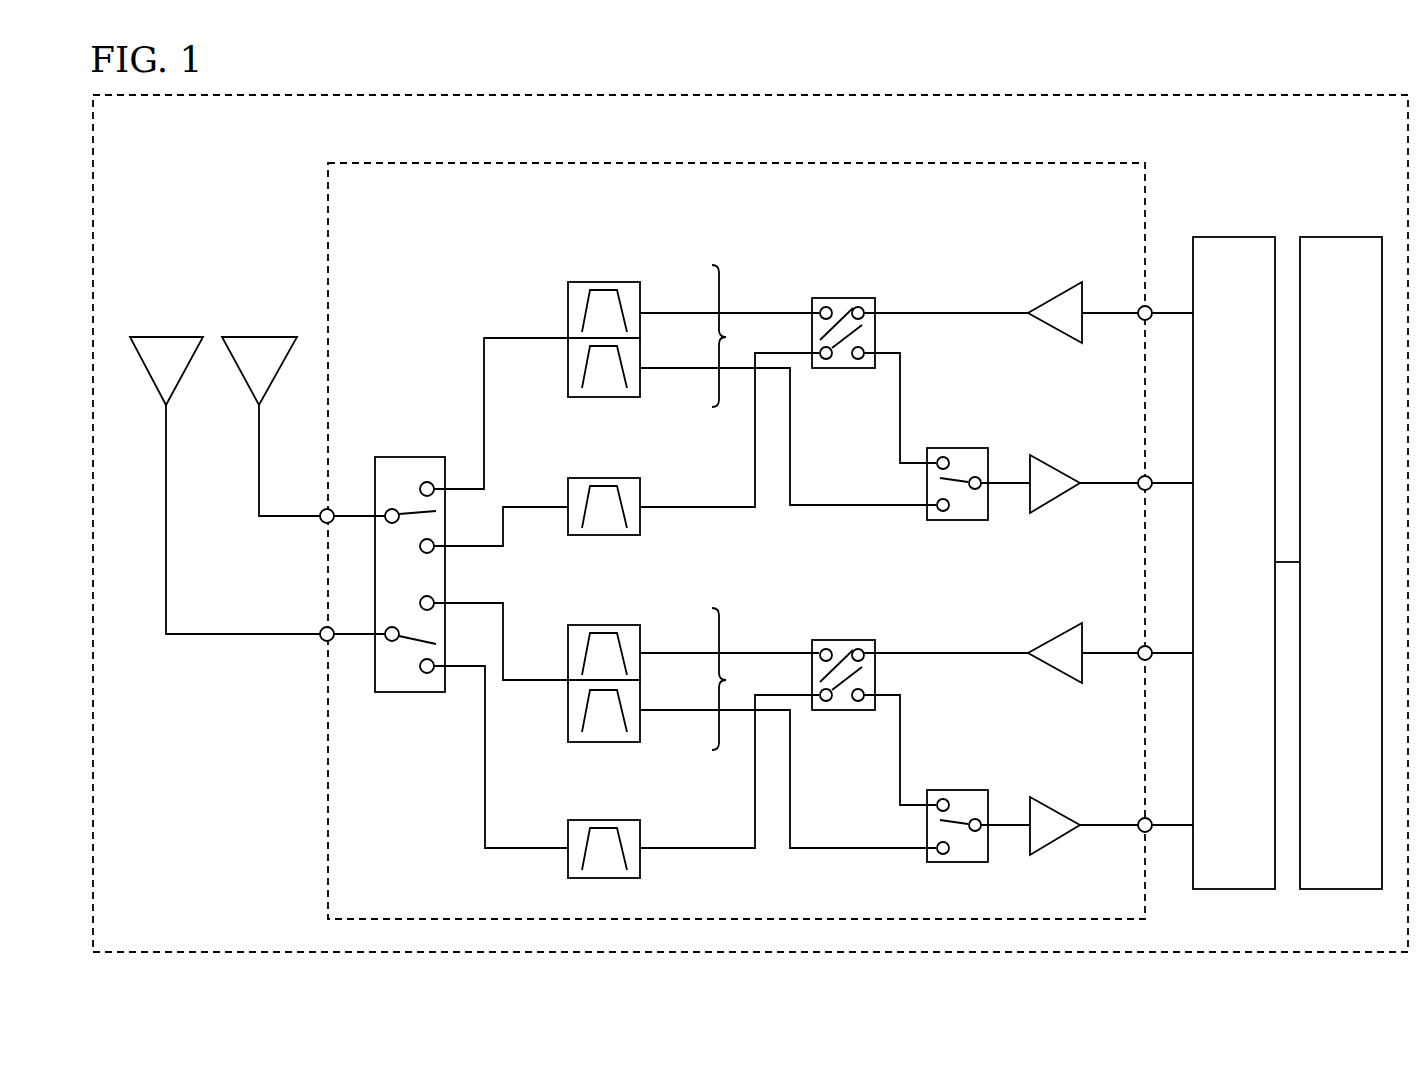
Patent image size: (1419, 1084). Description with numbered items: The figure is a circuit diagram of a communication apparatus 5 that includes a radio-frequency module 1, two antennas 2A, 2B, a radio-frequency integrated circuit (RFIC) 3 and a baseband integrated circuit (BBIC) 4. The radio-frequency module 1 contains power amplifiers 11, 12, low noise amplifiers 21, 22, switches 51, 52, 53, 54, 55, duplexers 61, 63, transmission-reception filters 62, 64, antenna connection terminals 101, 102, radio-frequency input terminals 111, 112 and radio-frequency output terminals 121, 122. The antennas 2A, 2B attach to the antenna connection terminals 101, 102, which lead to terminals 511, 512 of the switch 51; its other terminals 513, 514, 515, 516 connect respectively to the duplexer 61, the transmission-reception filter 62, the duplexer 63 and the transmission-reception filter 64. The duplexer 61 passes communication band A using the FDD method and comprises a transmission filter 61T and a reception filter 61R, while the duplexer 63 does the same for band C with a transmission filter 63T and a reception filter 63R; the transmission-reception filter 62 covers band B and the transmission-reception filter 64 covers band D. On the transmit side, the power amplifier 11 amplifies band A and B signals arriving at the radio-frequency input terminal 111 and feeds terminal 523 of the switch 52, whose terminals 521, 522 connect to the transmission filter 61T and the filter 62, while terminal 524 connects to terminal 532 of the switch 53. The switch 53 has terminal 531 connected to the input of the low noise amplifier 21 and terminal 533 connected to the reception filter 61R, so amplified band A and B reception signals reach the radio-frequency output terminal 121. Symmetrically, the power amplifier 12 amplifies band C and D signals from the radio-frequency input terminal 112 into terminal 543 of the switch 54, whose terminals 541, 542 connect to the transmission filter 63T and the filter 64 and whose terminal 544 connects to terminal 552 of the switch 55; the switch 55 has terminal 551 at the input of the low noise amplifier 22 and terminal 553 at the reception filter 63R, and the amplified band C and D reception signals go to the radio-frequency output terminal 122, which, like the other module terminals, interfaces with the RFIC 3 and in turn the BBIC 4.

The radio-frequency module 1 is at (1092, 162).
The antenna 2A is at (259, 336).
The antenna 2B is at (166, 336).
The radio-frequency integrated circuit (RFIC) 3 is at (1235, 237).
The baseband integrated circuit (BBIC) 4 is at (1342, 237).
The communication apparatus 5 is at (1370, 93).
The power amplifier 11 is at (1067, 290).
The power amplifier 12 is at (1057, 637).
The low noise amplifier 21 is at (1053, 502).
The low noise amplifier 22 is at (1052, 843).
The switch 51 is at (403, 457).
The terminal 511 is at (385, 509).
The terminal 512 is at (385, 641).
The terminal 513 is at (427, 482).
The terminal 514 is at (434, 542).
The terminal 515 is at (433, 598).
The terminal 516 is at (428, 673).
The switch 52 is at (840, 297).
The terminal 521 is at (822, 305).
The terminal 522 is at (825, 368).
The terminal 523 is at (863, 303).
The terminal 524 is at (858, 368).
The switch 53 is at (957, 447).
The terminal 531 is at (980, 478).
The terminal 532 is at (940, 457).
The terminal 533 is at (943, 513).
The switch 54 is at (840, 638).
The terminal 541 is at (822, 645).
The terminal 542 is at (825, 710).
The terminal 543 is at (863, 645).
The terminal 544 is at (858, 710).
The switch 55 is at (957, 788).
The terminal 551 is at (980, 820).
The terminal 552 is at (940, 799).
The terminal 553 is at (943, 855).
The duplexer 61 is at (665, 342).
The transmission filter 61T is at (643, 292).
The reception filter 61R is at (643, 383).
The transmission-reception filter 62 is at (643, 492).
The duplexer 63 is at (665, 685).
The transmission filter 63T is at (642, 635).
The reception filter 63R is at (642, 727).
The transmission-reception filter 64 is at (642, 833).
The antenna connection terminal 101 is at (320, 523).
The antenna connection terminal 102 is at (320, 641).
The radio-frequency input terminal 111 is at (1138, 305).
The radio-frequency input terminal 112 is at (1138, 645).
The radio-frequency output terminal 121 is at (1138, 476).
The radio-frequency output terminal 122 is at (1138, 817).